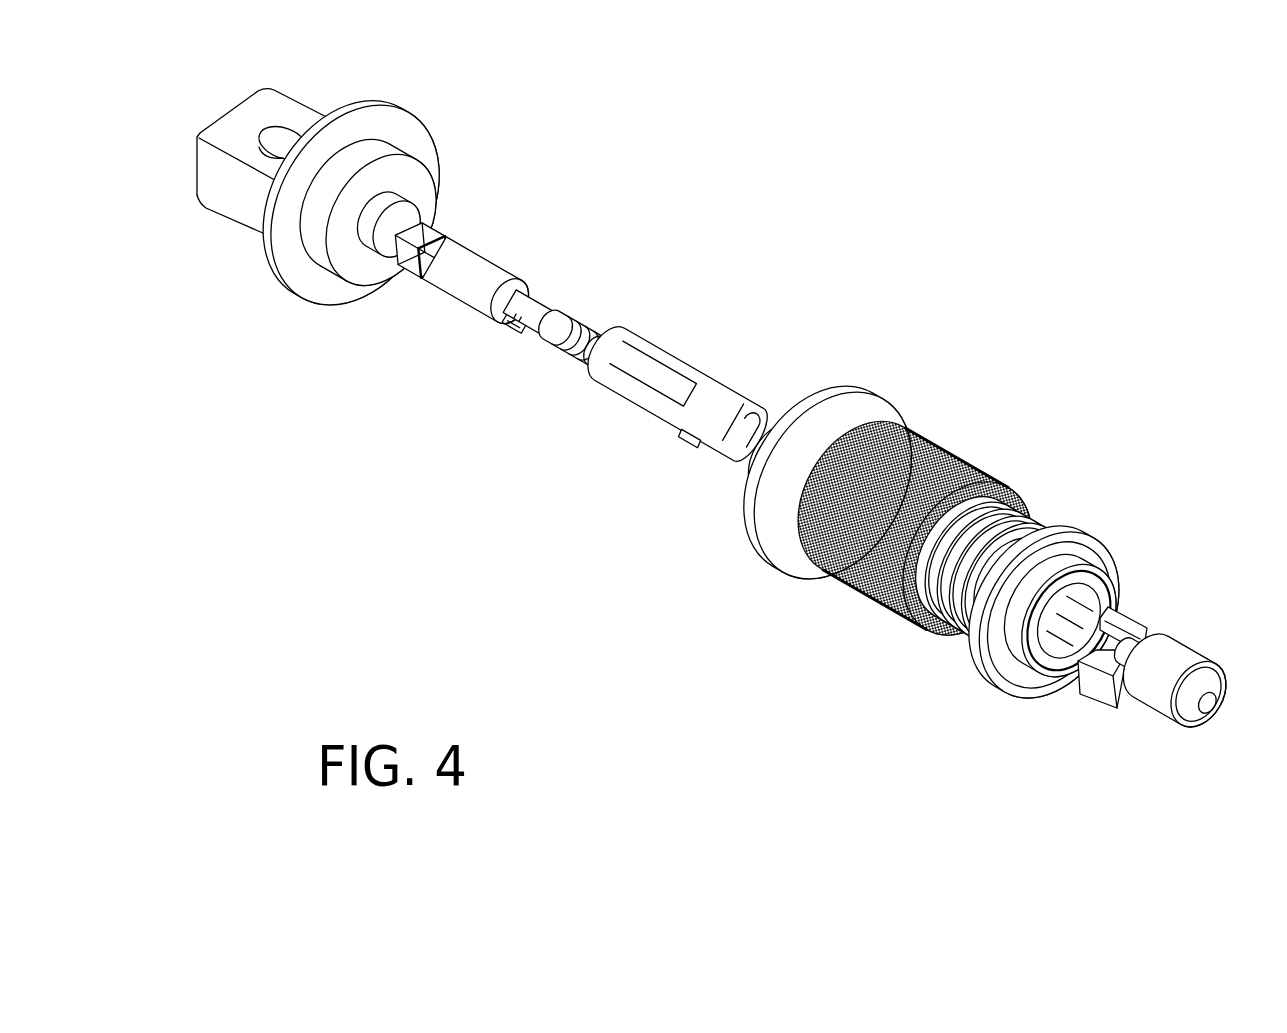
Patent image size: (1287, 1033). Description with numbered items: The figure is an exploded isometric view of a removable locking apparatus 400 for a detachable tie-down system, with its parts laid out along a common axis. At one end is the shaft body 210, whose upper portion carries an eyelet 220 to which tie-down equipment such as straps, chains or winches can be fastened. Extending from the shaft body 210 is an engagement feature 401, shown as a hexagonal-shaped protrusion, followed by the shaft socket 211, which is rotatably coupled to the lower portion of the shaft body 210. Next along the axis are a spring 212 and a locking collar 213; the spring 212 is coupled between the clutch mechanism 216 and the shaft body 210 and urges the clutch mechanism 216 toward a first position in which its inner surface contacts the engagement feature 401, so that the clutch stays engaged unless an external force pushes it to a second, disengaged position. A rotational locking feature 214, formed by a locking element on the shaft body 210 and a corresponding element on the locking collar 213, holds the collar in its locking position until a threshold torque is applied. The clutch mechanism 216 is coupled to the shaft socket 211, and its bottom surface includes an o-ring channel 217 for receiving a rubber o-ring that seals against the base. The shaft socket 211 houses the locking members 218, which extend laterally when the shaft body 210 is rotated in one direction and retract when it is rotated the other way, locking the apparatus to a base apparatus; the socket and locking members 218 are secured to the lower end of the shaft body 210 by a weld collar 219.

The removable locking apparatus 400 is at (1160, 140).
The shaft body 210 is at (337, 190).
The eyelet 220 is at (293, 118).
The engagement feature 401 is at (445, 232).
The shaft socket 211 is at (690, 362).
The spring 212 is at (747, 453).
The locking collar 213 is at (800, 574).
The rotational locking feature 214 is at (820, 406).
The clutch mechanism 216 is at (1000, 681).
The o-ring channel 217 is at (1095, 570).
The locking members 218 is at (1140, 628).
The weld collar 219 is at (1213, 710).